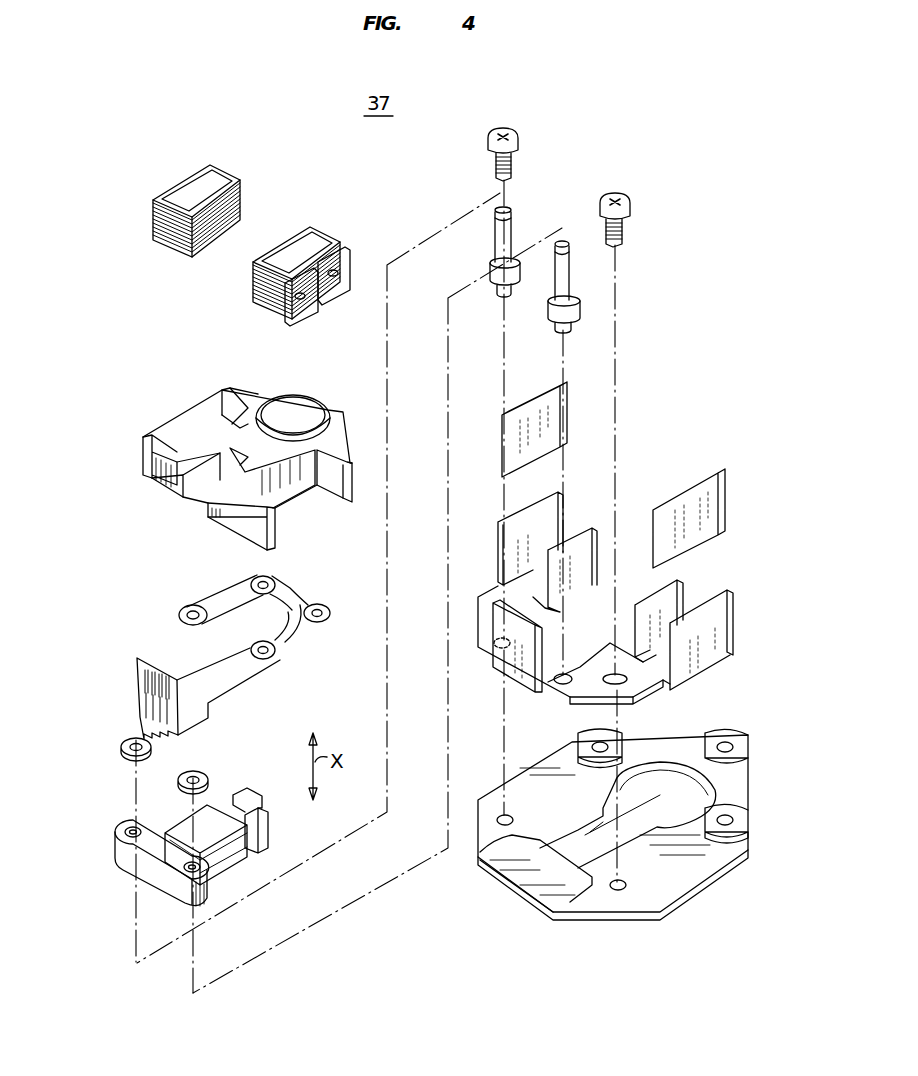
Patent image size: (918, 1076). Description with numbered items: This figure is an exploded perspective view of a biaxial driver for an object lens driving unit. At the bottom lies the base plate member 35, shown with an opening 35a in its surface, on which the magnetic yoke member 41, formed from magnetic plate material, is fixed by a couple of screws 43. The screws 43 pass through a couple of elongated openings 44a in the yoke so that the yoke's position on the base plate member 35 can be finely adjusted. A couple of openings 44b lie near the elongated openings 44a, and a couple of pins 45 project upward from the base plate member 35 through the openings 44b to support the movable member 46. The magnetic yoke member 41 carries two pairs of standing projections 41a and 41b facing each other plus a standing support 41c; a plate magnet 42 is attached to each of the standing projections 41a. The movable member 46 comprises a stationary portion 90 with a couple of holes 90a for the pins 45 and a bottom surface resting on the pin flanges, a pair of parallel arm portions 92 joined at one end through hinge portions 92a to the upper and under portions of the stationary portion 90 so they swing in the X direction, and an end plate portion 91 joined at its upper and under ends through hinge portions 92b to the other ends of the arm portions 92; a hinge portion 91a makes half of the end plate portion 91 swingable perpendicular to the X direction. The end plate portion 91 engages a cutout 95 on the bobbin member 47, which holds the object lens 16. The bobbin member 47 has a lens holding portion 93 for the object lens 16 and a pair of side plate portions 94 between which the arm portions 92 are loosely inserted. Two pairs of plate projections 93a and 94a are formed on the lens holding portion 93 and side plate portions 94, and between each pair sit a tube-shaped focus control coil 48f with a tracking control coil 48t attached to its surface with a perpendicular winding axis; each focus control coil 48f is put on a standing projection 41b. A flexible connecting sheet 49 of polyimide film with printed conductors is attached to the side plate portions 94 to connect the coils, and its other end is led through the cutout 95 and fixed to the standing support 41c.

The tracking control coil 48t is at (160, 205).
The focus control coil 48f is at (295, 240).
The bobbin member 47 is at (247, 453).
The lens holding portion 93 is at (340, 432).
The plate projections 93a is at (228, 408).
The object lens 16 is at (301, 395).
The side plate portions 94 is at (240, 480).
The plate projections 94a is at (148, 432).
The cutout 95 is at (225, 412).
The flexible connecting sheet 49 is at (245, 680).
The movable member 46 is at (198, 834).
The stationary portion 90 is at (141, 852).
The holes 90a is at (135, 825).
The end plate portion 91 is at (267, 795).
The hinge portion 91a is at (245, 790).
The arm portions 92 is at (233, 846).
The hinge portions 92a is at (175, 828).
The hinge portions 92b is at (255, 848).
The screws 43 is at (517, 138).
The pins 45 is at (512, 228).
The plate magnet 42 is at (540, 395).
The magnetic yoke member 41 is at (620, 597).
The standing projections 41a is at (550, 495).
The standing projections 41b is at (575, 528).
The standing support 41c is at (508, 668).
The elongated openings 44a is at (612, 670).
The openings 44b is at (560, 690).
The base plate member 35 is at (621, 814).
The base plate opening 35a is at (668, 780).